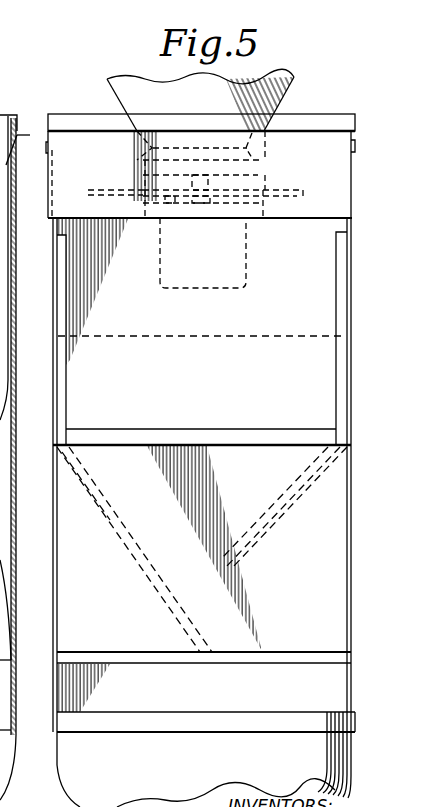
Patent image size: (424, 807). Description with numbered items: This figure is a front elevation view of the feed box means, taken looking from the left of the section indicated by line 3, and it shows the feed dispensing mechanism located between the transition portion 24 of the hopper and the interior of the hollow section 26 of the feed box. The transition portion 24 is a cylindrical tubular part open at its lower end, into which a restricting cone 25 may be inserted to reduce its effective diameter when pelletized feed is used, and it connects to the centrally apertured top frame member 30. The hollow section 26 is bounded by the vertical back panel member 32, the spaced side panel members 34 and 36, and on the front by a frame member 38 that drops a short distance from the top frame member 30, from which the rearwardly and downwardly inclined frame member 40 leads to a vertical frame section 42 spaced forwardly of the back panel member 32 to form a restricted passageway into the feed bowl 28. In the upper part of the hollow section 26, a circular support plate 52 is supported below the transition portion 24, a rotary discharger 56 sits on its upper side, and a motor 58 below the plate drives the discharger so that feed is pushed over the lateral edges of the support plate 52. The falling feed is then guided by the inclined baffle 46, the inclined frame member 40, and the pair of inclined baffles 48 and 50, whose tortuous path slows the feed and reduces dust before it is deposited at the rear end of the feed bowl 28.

The section line 3 is at (33, 138).
The transition portion 24 is at (268, 148).
The restricting cone 25 is at (251, 131).
The hollow section 26 is at (19, 180).
The feed bowl 28 is at (88, 769).
The top frame member 30 is at (2, 104).
The back panel member 32 is at (16, 320).
The side panel member 34 is at (56, 548).
The side panel member 36 is at (348, 594).
The frame member 38 is at (65, 187).
The inclined frame member 40 is at (80, 372).
The vertical frame section 42 is at (92, 574).
The baffle 46 is at (210, 340).
The inclined baffle 48 is at (274, 521).
The inclined baffle 50 is at (165, 603).
The circular support plate 52 is at (300, 192).
The rotary discharger 56 is at (266, 174).
The motor 58 is at (250, 263).